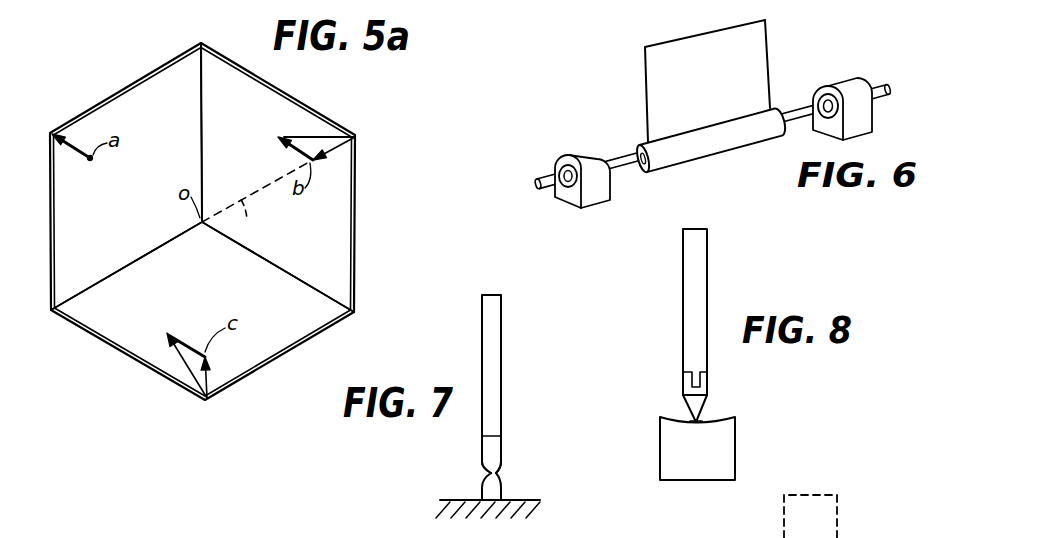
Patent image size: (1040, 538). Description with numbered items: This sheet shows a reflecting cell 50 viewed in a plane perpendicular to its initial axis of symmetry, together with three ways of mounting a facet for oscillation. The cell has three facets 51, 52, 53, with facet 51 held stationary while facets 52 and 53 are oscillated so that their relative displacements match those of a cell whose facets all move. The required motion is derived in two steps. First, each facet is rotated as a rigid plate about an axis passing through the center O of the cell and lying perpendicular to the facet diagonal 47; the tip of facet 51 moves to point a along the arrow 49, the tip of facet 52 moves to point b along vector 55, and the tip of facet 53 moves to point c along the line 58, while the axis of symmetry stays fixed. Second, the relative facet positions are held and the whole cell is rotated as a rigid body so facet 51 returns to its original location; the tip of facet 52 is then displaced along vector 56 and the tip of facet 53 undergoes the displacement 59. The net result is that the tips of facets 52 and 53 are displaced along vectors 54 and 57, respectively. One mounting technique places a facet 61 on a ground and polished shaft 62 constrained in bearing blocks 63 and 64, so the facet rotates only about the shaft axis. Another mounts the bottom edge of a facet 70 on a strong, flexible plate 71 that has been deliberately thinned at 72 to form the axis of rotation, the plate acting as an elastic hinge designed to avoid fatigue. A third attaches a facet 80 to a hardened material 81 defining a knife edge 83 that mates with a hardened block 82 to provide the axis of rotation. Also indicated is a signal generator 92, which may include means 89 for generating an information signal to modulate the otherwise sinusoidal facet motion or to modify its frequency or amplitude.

In FIG. 5A, the diagonal 47 is at (256, 197).
In FIG. 5A, the scanning direction arrow a in face 51 49 is at (70, 150).
In FIG. 5A, the cubic crystal block 50 is at (83, 82).
In FIG. 5A, the facet 51 is at (137, 196).
In FIG. 5A, the facet 52 is at (253, 131).
In FIG. 5A, the facet 53 is at (133, 324).
In FIG. 5A, the vector 54 is at (318, 138).
In FIG. 5A, the vector 55 is at (340, 150).
In FIG. 5A, the vector 56 is at (297, 147).
In FIG. 5A, the vector 57 is at (180, 360).
In FIG. 5A, the direction line c in face 53 58 is at (209, 375).
In FIG. 5A, the displacement 59 is at (183, 340).
In FIG. 6, the facet 61 is at (725, 94).
In FIG. 6, the polished shaft 62 is at (806, 108).
In FIG. 6, the bearing block 63 is at (581, 152).
In FIG. 6, the bearing block 64 is at (855, 87).
In FIG. 7, the facet 70 is at (495, 370).
In FIG. 7, the flexible plate 71 is at (502, 492).
In FIG. 7, the thinned portion 72 is at (488, 472).
In FIG. 8, the facet 80 is at (698, 292).
In FIG. 8, the hardened material 81 is at (707, 386).
In FIG. 8, the hardened block 82 is at (733, 450).
In FIG. 8, the knife edge 83 is at (698, 423).
In FIG. 8, the means for generating an information signal 89 is at (820, 531).
In FIG. 8, the signal generator 92 is at (879, 525).